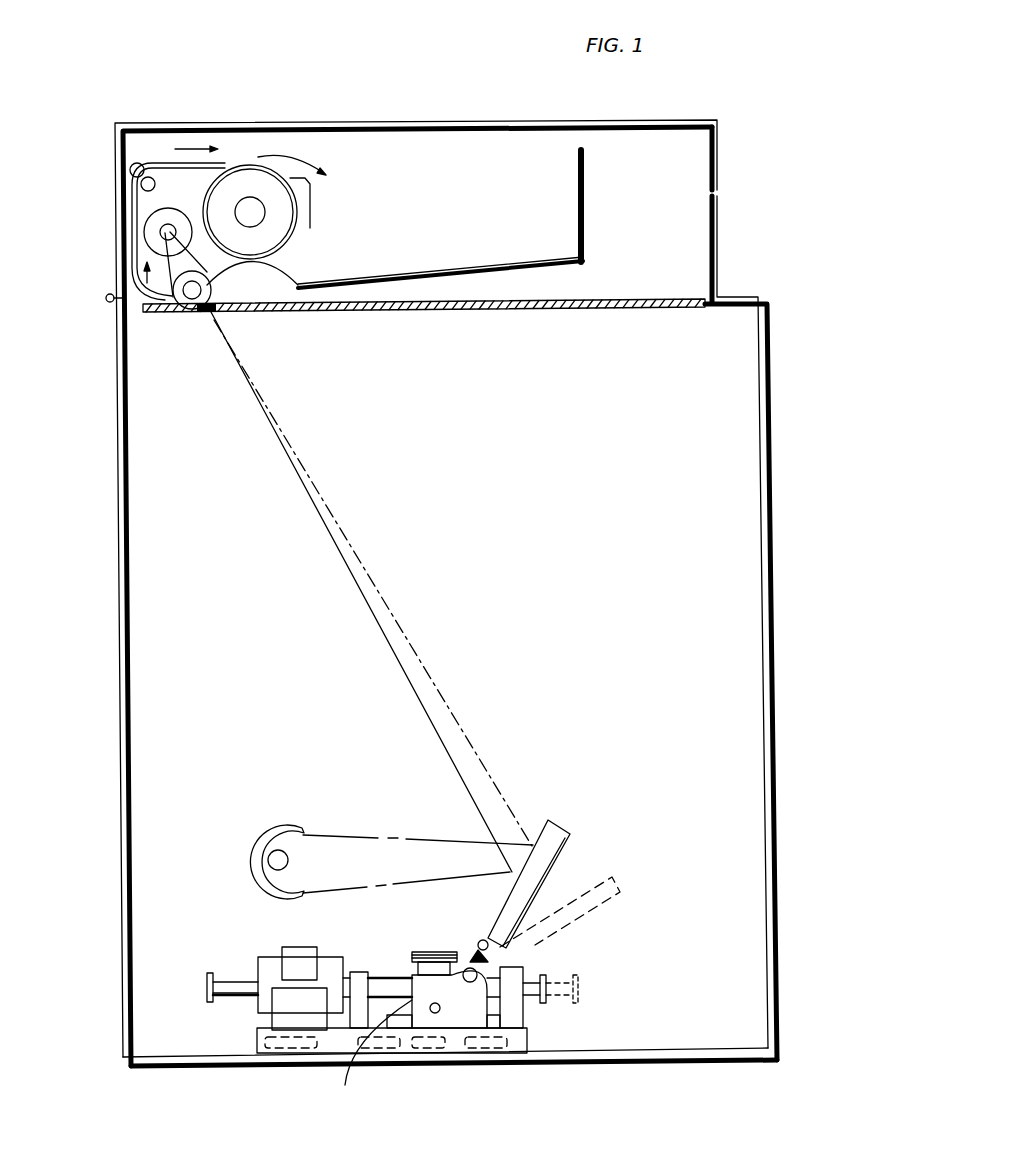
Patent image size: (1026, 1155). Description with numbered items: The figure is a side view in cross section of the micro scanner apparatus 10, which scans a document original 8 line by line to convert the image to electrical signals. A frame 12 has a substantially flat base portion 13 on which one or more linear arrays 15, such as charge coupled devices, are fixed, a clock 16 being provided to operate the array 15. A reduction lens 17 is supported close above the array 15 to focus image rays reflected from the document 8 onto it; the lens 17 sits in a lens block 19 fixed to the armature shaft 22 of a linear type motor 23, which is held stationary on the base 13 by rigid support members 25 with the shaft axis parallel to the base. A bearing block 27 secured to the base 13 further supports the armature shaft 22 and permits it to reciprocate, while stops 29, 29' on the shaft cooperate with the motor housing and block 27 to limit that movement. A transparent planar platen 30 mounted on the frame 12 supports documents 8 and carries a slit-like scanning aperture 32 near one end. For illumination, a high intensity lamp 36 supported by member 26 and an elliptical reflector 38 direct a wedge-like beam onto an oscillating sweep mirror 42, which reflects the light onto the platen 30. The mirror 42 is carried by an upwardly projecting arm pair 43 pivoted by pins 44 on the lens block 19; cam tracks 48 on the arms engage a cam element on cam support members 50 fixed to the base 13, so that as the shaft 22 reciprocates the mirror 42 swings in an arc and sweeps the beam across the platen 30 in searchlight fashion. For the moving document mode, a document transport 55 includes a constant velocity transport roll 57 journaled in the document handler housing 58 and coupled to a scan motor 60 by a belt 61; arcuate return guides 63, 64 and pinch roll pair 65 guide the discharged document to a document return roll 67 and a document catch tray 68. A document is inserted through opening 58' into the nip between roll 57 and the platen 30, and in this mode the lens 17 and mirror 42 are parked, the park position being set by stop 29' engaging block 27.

The document original 8 is at (545, 302).
The micro scanner apparatus 10 is at (100, 547).
The frame 12 is at (118, 625).
The base portion 13 is at (520, 1058).
The linear array 15 is at (440, 1030).
The clock 16 is at (293, 1048).
The reduction lens 17 is at (425, 955).
The lens block 19 is at (372, 1058).
The armature shaft 22 is at (528, 995).
The linear type motor 23 is at (265, 953).
The rigid support members 25 is at (285, 1017).
The member 26 is at (362, 975).
The bearing block 27 is at (525, 1013).
The stop 29 is at (209, 982).
The stop 29' is at (577, 984).
The platen 30 is at (545, 312).
The scanning aperture 32 is at (208, 313).
The high intensity lamp 36 is at (268, 858).
The elliptical reflector 38 is at (277, 830).
The oscillating sweep mirror 42 is at (548, 853).
The arm pair 43 is at (570, 933).
The pins 44 is at (442, 1012).
The cam tracks 48 is at (483, 943).
The cam support members 50 is at (415, 1022).
The document transport 55 is at (425, 195).
The constant velocity transport roll 57 is at (177, 293).
The document handler housing 58 is at (735, 158).
The opening 58' is at (740, 249).
The scan motor 60 is at (157, 233).
The belt 61 is at (163, 247).
The arcuate return guide 63 is at (137, 200).
The arcuate return guide 64 is at (140, 206).
The pinch roll pair 65 is at (133, 165).
The document return roll 67 is at (295, 210).
The document catch tray 68 is at (587, 243).